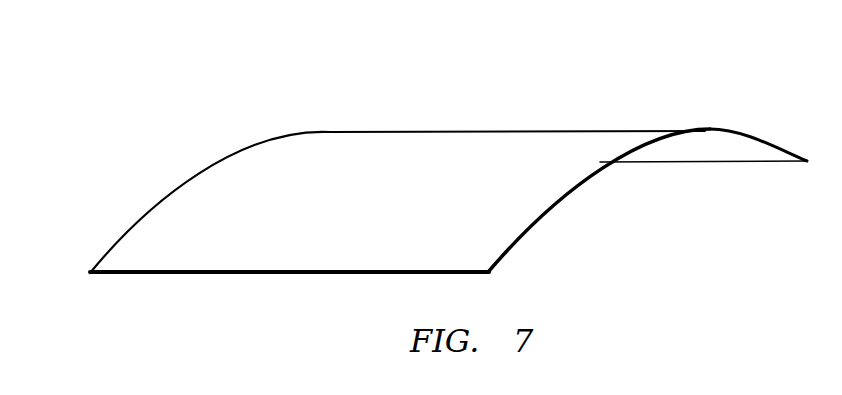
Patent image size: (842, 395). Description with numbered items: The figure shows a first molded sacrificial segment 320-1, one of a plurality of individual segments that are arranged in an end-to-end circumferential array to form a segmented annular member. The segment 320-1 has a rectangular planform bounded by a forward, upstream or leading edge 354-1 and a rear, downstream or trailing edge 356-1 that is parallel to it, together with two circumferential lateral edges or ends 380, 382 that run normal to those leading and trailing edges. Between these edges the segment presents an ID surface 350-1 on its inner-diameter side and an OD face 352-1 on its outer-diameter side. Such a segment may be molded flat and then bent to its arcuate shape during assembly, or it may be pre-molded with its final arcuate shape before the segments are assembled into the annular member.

The molded sacrificial segment 320-1 is at (434, 77).
The ID surface 350-1 is at (703, 149).
The OD face 352-1 is at (332, 158).
The forward edge 354-1 is at (190, 170).
The rear edge 356-1 is at (540, 213).
The circumferential lateral edge 380 is at (773, 163).
The circumferential lateral edge 382 is at (280, 275).